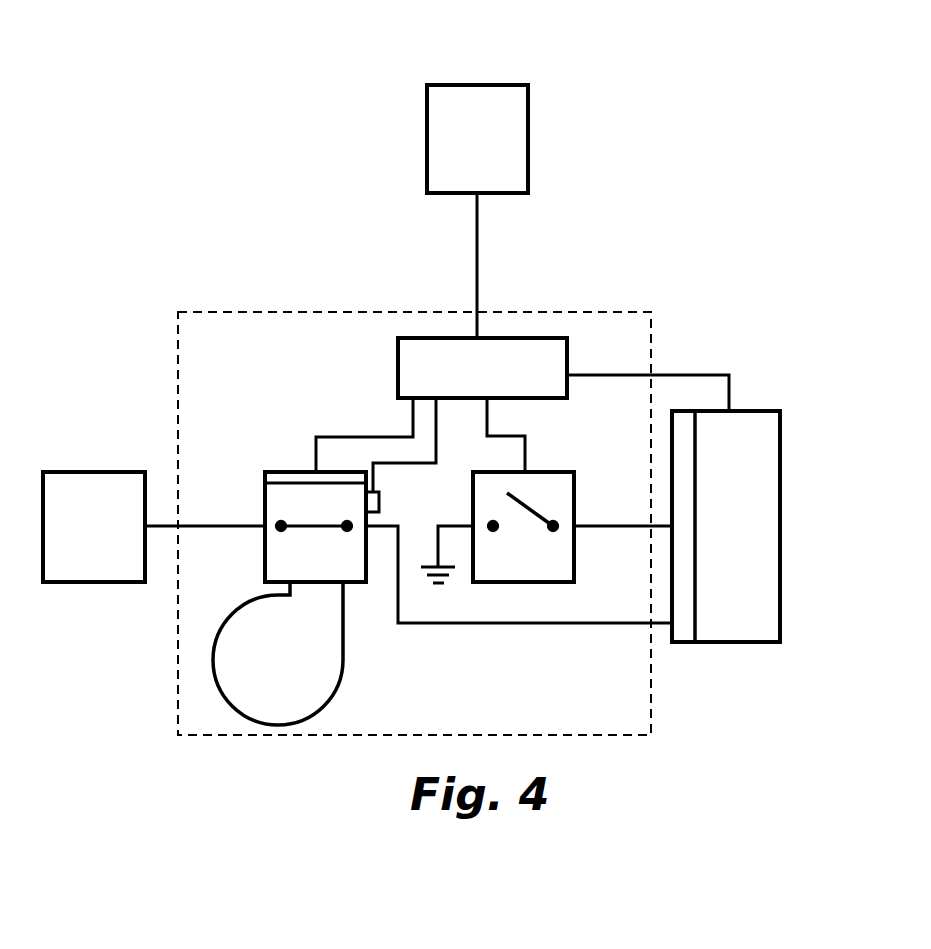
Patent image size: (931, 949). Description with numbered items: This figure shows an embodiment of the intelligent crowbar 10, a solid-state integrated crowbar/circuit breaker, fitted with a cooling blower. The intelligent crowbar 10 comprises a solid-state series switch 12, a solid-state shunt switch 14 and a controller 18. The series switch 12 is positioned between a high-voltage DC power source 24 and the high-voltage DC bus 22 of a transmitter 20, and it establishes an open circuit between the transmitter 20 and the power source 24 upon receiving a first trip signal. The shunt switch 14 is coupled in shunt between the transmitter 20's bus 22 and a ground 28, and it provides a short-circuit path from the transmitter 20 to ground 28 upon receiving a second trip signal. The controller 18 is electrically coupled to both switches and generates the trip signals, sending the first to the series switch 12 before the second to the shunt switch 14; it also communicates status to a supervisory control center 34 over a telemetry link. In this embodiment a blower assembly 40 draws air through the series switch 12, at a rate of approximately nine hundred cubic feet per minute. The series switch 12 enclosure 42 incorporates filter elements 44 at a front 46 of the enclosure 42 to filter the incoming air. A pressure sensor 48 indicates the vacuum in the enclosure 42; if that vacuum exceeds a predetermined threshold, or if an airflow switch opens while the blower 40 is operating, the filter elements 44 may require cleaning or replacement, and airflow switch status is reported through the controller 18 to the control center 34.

The intelligent crowbar 10 is at (178, 331).
The solid-state series switch 12 is at (367, 597).
The solid-state shunt switch 14 is at (575, 497).
The controller 18 is at (398, 361).
The transmitter 20 is at (780, 521).
The high-voltage DC bus 22 is at (696, 481).
The high-voltage DC power source 24 is at (103, 472).
The ground 28 is at (448, 584).
The control center 34 is at (484, 85).
The blower assembly 40 is at (278, 653).
The enclosure 42 is at (265, 549).
The filter elements 44 is at (272, 472).
The front 46 is at (265, 482).
The pressure sensor 48 is at (380, 506).